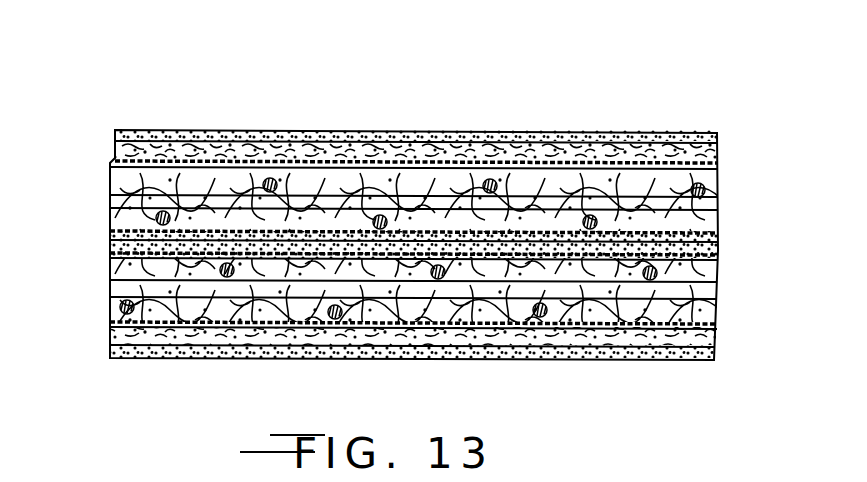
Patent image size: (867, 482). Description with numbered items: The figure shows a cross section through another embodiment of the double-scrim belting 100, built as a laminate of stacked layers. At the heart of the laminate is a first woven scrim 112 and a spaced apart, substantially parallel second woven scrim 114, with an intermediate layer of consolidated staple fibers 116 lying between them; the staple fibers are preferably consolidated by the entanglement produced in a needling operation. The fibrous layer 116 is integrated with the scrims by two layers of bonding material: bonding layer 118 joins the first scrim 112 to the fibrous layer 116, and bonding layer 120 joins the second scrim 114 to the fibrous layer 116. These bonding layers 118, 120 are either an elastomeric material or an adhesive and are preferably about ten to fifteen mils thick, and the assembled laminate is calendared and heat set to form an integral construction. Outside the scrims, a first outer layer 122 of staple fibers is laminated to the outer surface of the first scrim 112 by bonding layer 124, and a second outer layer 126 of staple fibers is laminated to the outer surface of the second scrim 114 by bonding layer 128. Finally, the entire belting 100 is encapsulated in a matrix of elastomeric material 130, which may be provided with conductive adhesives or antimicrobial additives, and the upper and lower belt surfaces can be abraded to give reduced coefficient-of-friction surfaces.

The double-scrim belting 100 is at (600, 108).
The first woven scrim 112 is at (722, 205).
The second woven scrim 114 is at (100, 285).
The intermediate layer of consolidated staple fibers 116 is at (723, 252).
The bonding layer 118 is at (723, 238).
The bonding layer 120 is at (108, 255).
The first outer layer of staple fibers 122 is at (720, 160).
The bonding layer 124 is at (720, 168).
The second outer layer of staple fibers 126 is at (110, 337).
The bonding layer 128 is at (110, 323).
The elastomeric material 130 is at (681, 131).